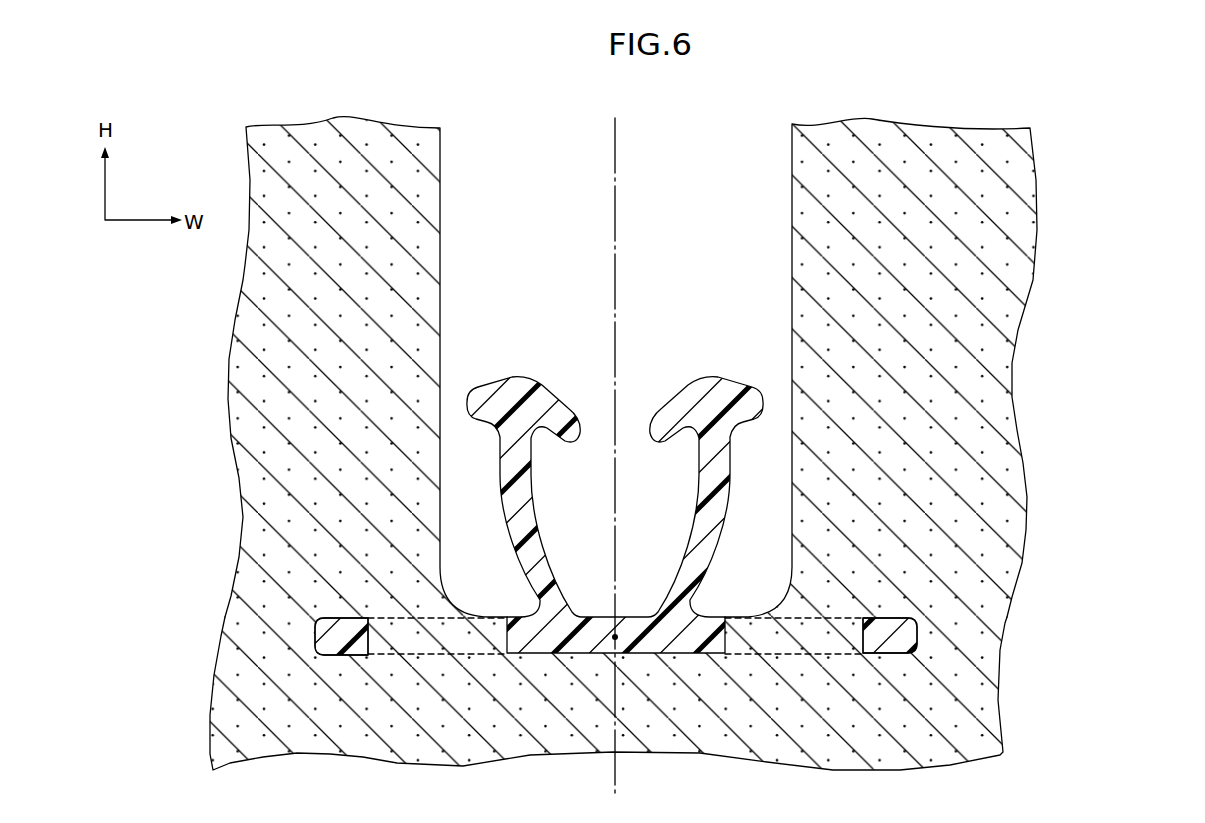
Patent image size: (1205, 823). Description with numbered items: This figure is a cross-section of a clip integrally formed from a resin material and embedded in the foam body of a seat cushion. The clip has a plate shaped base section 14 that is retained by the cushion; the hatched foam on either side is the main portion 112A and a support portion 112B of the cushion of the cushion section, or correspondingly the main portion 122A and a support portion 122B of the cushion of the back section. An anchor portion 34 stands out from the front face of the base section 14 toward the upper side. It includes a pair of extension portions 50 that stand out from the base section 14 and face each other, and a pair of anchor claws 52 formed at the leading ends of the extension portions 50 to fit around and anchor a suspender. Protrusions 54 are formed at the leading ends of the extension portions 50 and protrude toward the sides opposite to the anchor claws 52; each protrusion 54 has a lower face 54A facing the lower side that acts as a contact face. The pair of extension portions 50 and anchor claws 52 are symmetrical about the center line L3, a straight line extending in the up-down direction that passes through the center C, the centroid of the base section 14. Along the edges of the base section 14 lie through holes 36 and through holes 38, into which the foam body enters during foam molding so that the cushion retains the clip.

The base section 14 is at (616, 711).
The anchor portion 34 is at (619, 444).
The through hole 36 is at (368, 640).
The through hole 38 is at (862, 637).
The extension portion 50 is at (619, 485).
The anchor claw 52 is at (619, 485).
The protrusion 54 is at (619, 485).
The lower face 54A is at (478, 421).
The main portion 112A is at (949, 367).
The support portion 112B is at (298, 367).
The main portion 122A is at (1010, 294).
The support portion 122B is at (258, 272).
The center C is at (612, 641).
The center line L3 is at (617, 777).